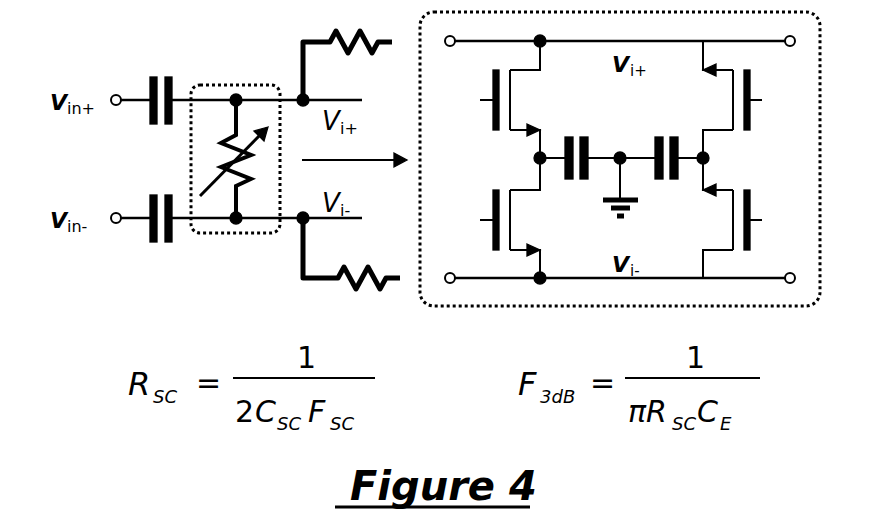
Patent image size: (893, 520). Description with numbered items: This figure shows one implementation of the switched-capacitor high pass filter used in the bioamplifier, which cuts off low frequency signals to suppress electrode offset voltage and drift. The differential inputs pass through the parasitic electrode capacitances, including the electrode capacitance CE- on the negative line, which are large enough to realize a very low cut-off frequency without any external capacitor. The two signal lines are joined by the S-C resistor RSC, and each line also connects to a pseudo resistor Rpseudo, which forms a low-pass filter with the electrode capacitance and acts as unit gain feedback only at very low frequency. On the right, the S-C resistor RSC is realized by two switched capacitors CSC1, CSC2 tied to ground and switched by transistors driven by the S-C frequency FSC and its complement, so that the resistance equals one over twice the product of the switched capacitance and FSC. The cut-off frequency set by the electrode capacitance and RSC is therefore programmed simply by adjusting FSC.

The electrode capacitance CE- is at (161, 234).
The S-C resistor RSC is at (235, 177).
The pseudo resistor Rpseudo is at (331, 166).
The S-C frequency FSC is at (799, 88).
The switched capacitor CSC1 is at (580, 146).
The switched capacitor CSC2 is at (661, 146).